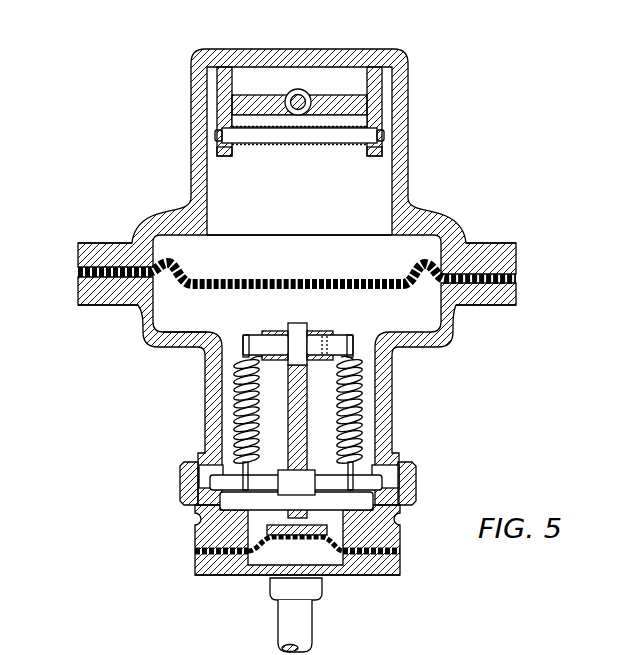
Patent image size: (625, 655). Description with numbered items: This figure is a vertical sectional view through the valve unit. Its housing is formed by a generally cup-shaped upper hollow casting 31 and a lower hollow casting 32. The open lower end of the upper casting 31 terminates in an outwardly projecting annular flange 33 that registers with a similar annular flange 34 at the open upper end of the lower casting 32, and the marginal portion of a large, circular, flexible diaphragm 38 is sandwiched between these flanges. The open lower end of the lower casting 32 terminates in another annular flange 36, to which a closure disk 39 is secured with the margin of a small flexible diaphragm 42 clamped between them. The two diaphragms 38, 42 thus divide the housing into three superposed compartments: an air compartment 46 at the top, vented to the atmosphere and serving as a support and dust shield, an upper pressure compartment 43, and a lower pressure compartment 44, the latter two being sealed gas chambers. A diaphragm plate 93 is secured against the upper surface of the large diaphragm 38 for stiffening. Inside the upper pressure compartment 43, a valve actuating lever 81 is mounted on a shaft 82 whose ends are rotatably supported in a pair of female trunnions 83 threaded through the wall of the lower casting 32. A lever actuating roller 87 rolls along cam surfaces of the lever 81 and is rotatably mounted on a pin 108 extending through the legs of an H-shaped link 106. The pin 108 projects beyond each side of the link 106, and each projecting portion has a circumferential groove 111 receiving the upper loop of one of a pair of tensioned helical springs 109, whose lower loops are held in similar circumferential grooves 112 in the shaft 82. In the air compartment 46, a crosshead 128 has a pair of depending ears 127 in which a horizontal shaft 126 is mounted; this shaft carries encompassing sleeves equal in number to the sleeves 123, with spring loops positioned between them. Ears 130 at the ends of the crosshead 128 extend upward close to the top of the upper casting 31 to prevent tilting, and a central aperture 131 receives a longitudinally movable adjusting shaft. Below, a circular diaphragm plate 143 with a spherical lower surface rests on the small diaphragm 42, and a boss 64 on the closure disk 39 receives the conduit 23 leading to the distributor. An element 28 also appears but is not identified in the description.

The conduit 23 is at (312, 636).
The pressure regulator 28 is at (185, 47).
The upper hollow casting 31 is at (399, 50).
The lower hollow casting 32 is at (458, 343).
The annular flange 33 is at (78, 252).
The annular flange 34 is at (78, 292).
The annular flange 36 is at (399, 542).
The large flexible diaphragm 38 is at (287, 278).
The closure disk 39 is at (400, 574).
The small flexible diaphragm 42 is at (195, 552).
The upper pressure compartment 43 is at (198, 321).
The lower pressure compartment 44 is at (325, 566).
The air compartment 46 is at (303, 223).
The boss 64 is at (323, 592).
The valve actuating lever 81 is at (307, 388).
The fulcrum shaft 82 is at (273, 475).
The female trunnions 83 is at (180, 467).
The lever actuating roller 87 is at (300, 323).
The diaphragm plate 93 is at (365, 277).
The H-shaped link 106 is at (273, 331).
The pin 108 is at (336, 338).
The helical springs 109 is at (240, 390).
The circumferential groove 111 is at (243, 340).
The circumferential grooves 112 is at (243, 478).
The sleeves 123 is at (277, 147).
The horizontal shaft 126 is at (303, 141).
The ears 127 is at (218, 153).
The crosshead 128 is at (343, 91).
The ears 130 is at (220, 85).
The aperture 131 is at (301, 91).
The diaphragm plate 143 is at (340, 556).